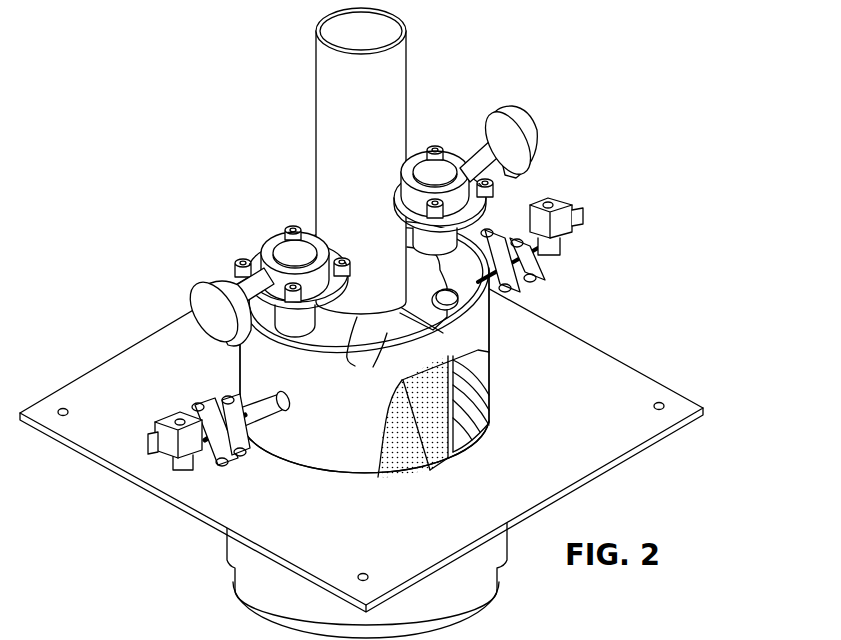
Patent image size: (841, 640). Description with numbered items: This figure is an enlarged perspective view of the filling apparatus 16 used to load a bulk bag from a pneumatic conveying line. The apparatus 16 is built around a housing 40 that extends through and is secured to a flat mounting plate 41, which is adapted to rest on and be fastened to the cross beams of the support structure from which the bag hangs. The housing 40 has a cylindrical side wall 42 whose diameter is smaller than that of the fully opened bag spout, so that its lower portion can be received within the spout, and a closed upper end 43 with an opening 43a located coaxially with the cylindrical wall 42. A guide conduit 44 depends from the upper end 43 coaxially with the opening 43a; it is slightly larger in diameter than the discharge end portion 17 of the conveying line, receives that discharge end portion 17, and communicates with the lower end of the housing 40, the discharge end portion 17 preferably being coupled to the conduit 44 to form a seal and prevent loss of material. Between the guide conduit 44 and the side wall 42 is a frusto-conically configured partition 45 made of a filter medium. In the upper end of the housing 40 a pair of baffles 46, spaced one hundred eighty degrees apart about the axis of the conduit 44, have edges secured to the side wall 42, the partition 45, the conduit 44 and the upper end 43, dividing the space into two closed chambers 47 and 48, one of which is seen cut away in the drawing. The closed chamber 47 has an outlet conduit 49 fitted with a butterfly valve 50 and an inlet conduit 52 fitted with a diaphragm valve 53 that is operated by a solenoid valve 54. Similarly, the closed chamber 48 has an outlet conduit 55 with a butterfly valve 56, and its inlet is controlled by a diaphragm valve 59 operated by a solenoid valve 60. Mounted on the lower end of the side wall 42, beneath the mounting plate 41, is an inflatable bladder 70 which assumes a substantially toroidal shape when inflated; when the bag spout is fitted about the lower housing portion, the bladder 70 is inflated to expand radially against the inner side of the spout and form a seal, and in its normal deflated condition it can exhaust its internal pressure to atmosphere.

The apparatus 16 is at (196, 165).
The discharge end portion 17 is at (405, 66).
The housing 40 is at (500, 330).
The mounting plate 41 is at (650, 376).
The cylindrical side wall 42 is at (240, 366).
The closed upper end 43 is at (470, 310).
The opening 43a is at (360, 312).
The guide conduit 44 is at (387, 337).
The frusto-conically configured partition 45 is at (400, 460).
The baffles 46 is at (440, 445).
The closed chamber 47 is at (383, 450).
The closed chamber 48 is at (478, 388).
The outlet conduit 49 is at (300, 323).
The butterfly valve 50 is at (258, 246).
The inlet conduit 52 is at (270, 410).
The diaphragm valve 53 is at (227, 470).
The solenoid valve 54 is at (182, 455).
The outlet conduit 55 is at (498, 205).
The butterfly valve 56 is at (452, 145).
The diaphragm valve 59 is at (545, 265).
The solenoid valve 60 is at (565, 228).
The inflatable bladder 70 is at (493, 577).